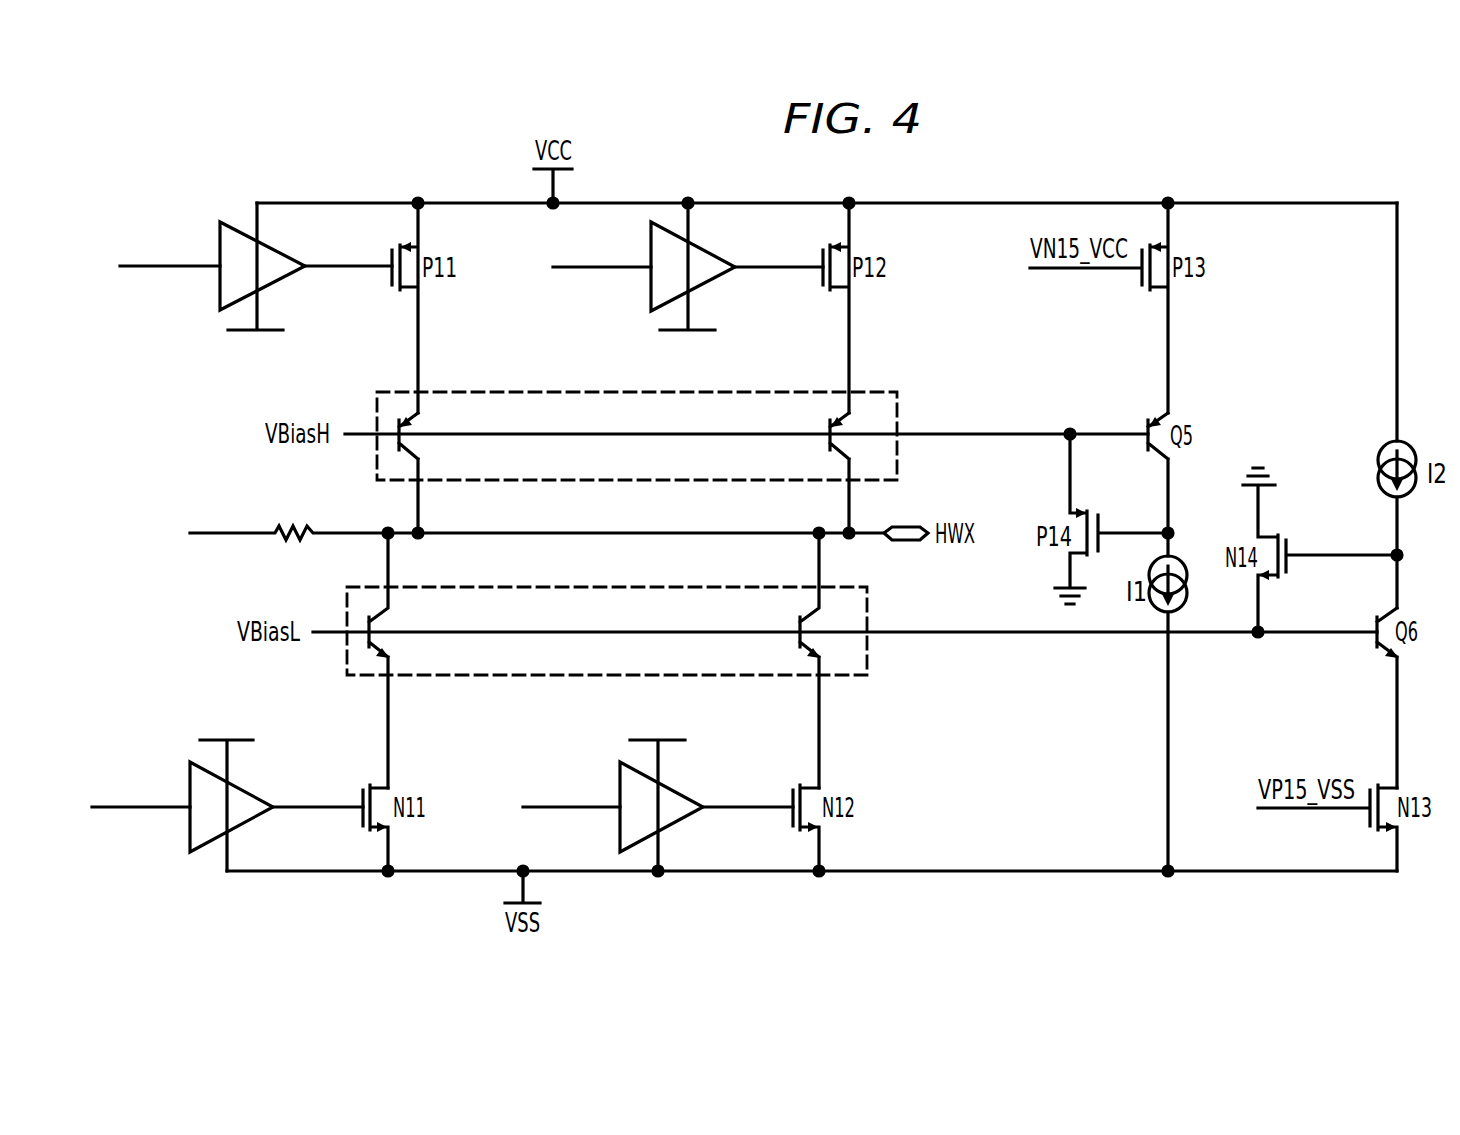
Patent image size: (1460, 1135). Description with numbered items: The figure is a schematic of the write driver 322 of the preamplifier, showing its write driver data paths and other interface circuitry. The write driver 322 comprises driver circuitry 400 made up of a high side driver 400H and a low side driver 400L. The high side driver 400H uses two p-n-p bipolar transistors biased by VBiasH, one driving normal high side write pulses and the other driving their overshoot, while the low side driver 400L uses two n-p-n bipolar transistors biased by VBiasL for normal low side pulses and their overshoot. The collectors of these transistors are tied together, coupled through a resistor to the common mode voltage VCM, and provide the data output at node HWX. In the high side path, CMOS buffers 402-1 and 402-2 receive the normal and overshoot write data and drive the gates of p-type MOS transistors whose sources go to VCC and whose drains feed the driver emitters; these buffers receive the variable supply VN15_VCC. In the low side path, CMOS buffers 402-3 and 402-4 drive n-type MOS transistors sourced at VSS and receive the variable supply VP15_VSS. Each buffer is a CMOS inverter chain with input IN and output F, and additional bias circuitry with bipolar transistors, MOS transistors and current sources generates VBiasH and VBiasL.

The write driver 322 is at (1343, 157).
The driver circuitry 400 is at (286, 571).
The high side driver 400H is at (898, 456).
The low side driver 400L is at (868, 600).
The CMOS buffer 402-1 is at (276, 248).
The CMOS buffer 402-2 is at (708, 248).
The CMOS buffer 402-3 is at (245, 824).
The CMOS buffer 402-4 is at (676, 824).